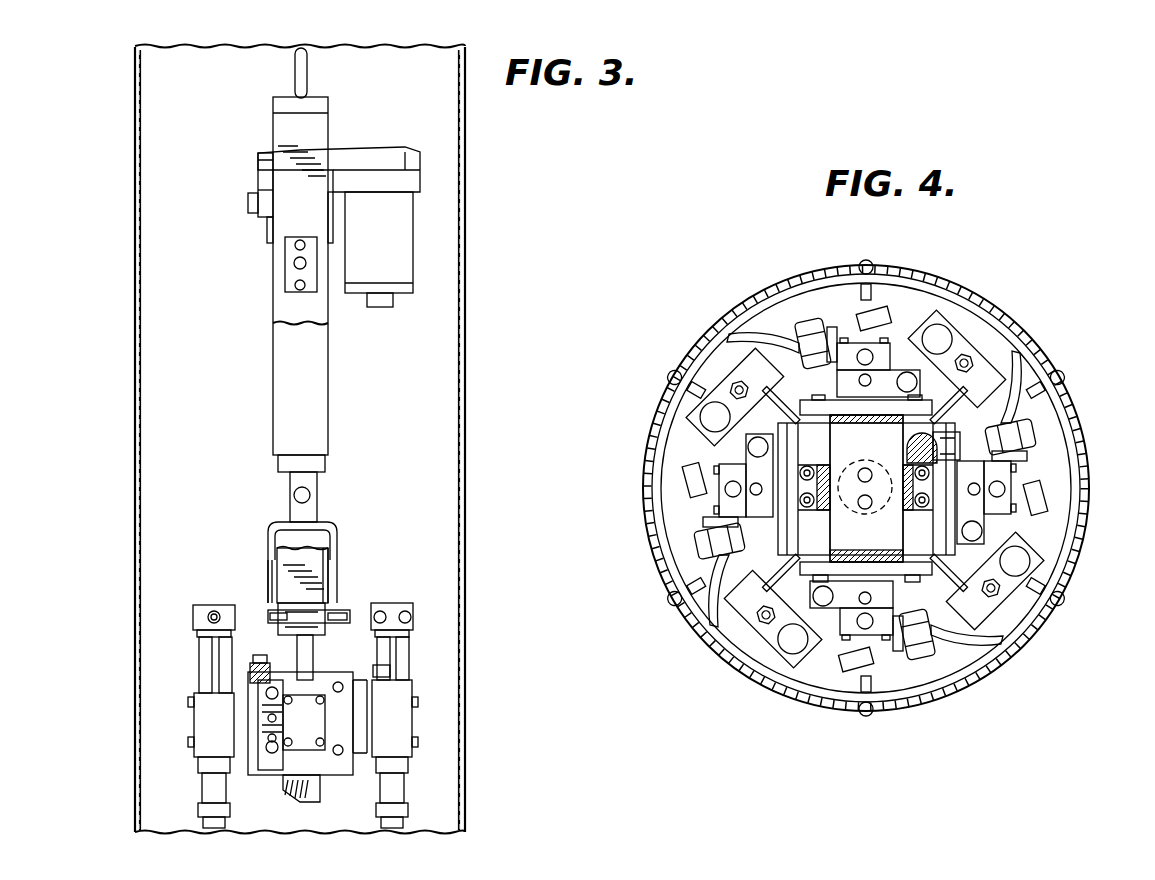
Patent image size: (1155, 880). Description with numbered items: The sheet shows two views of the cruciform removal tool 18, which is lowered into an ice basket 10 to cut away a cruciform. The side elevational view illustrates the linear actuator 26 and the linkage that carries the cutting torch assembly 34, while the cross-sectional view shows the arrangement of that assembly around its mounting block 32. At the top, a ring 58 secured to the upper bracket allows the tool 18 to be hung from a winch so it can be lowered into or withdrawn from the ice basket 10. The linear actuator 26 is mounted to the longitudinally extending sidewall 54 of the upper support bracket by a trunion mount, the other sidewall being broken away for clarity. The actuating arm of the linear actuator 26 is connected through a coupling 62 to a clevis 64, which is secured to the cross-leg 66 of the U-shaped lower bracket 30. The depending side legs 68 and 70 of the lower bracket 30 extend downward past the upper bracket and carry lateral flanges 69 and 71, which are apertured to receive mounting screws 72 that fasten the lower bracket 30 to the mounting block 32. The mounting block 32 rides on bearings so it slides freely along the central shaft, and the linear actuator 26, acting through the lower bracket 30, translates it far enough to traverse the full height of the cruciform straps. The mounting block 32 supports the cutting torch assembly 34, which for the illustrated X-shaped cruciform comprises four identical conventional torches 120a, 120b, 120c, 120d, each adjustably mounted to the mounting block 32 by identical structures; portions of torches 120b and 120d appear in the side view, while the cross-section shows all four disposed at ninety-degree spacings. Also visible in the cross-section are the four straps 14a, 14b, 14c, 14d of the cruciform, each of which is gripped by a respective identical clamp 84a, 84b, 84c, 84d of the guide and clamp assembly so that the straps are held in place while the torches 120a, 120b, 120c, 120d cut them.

In FIG. 3, the ice basket 10 is at (134, 140).
In FIG. 3, the cruciform removal tool 18 is at (266, 92).
In FIG. 3, the ring 58 is at (309, 72).
In FIG. 3, the linear actuator 26 is at (356, 152).
In FIG. 3, the sidewall 54 is at (320, 306).
In FIG. 3, the coupling 62 is at (290, 489).
In FIG. 3, the clevis 64 is at (293, 512).
In FIG. 3, the cross-leg 66 is at (290, 530).
In FIG. 3, the lower bracket 30 is at (337, 577).
In FIG. 3, the side leg 68 is at (337, 597).
In FIG. 3, the side leg 70 is at (268, 575).
In FIG. 3, the cutting torch assembly 34 is at (421, 636).
In FIG. 3, the mounting screws 72 is at (258, 657).
In FIG. 3, the lateral flange 71 is at (253, 661).
In FIG. 3, the lateral flange 69 is at (397, 662).
In FIG. 3, the mounting block 32 is at (337, 723).
In FIG. 4, the torch 120a is at (930, 655).
In FIG. 3, the torch 120b is at (197, 768).
In FIG. 4, the torch 120b is at (1035, 455).
In FIG. 4, the torch 120c is at (791, 324).
In FIG. 3, the torch 120d is at (410, 758).
In FIG. 4, the torch 120d is at (676, 549).
In FIG. 4, the strap 14a is at (1034, 560).
In FIG. 4, the strap 14b is at (965, 334).
In FIG. 4, the strap 14c is at (710, 369).
In FIG. 4, the strap 14d is at (751, 641).
In FIG. 4, the clamp 84a is at (1040, 565).
In FIG. 4, the clamp 84b is at (976, 350).
In FIG. 4, the clamp 84c is at (729, 373).
In FIG. 4, the clamp 84d is at (751, 611).